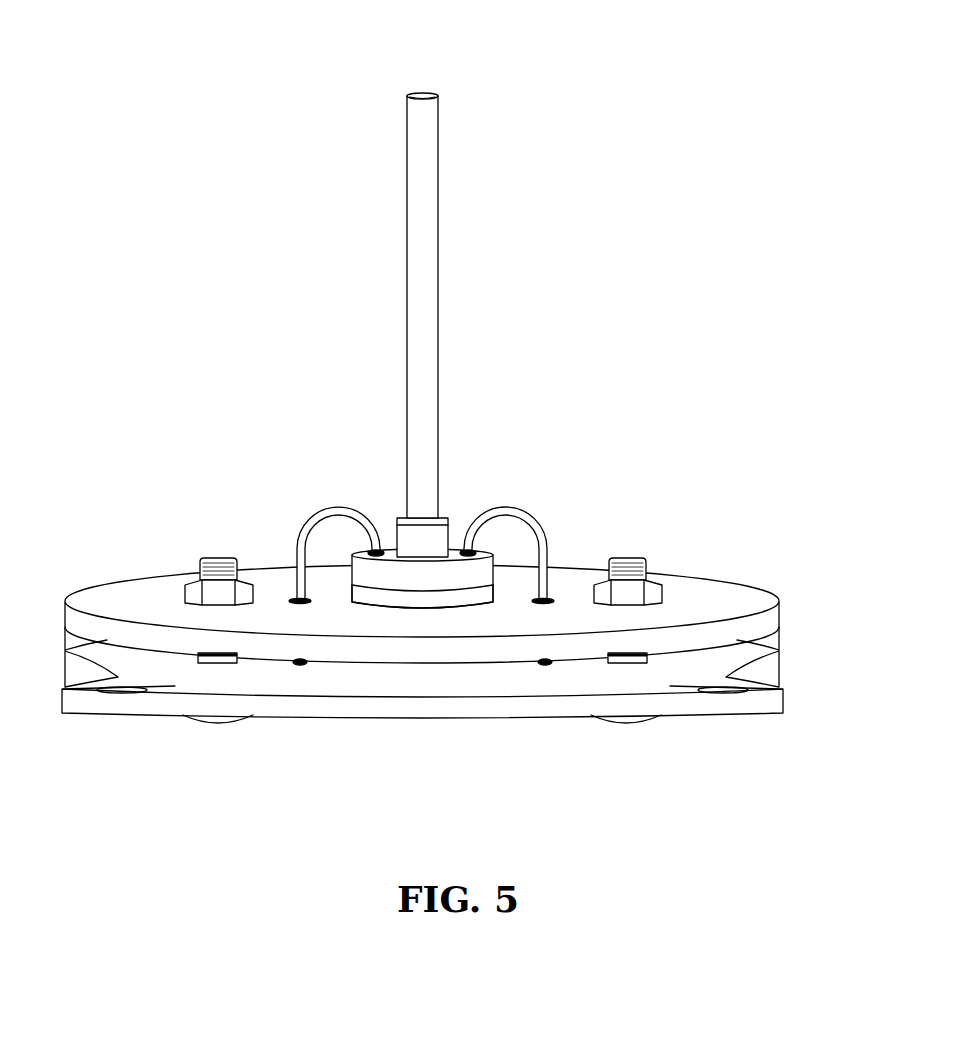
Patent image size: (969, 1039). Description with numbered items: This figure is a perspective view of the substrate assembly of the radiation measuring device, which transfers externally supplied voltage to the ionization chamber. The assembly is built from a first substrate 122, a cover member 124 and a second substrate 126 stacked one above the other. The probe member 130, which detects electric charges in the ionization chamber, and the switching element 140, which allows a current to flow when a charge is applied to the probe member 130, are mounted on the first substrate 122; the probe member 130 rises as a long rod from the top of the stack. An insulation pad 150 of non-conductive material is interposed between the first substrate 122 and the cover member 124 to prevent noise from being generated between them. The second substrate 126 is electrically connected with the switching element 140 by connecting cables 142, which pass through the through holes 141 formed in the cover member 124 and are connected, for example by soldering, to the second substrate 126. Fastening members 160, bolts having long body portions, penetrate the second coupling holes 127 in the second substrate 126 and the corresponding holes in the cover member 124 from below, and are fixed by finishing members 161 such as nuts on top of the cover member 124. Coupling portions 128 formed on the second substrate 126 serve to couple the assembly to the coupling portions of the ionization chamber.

The first substrate 122 is at (395, 573).
The cover member 124 is at (735, 592).
The second substrate 126 is at (400, 705).
The second coupling holes 127 is at (205, 663).
The coupling portions 128 is at (783, 632).
The probe member 130 is at (420, 257).
The switching element 140 is at (425, 535).
The through holes 141 is at (293, 600).
The connecting cables 142 is at (335, 520).
The insulation pad 150 is at (373, 597).
The fastening members 160 is at (217, 717).
The finishing members 161 is at (193, 592).